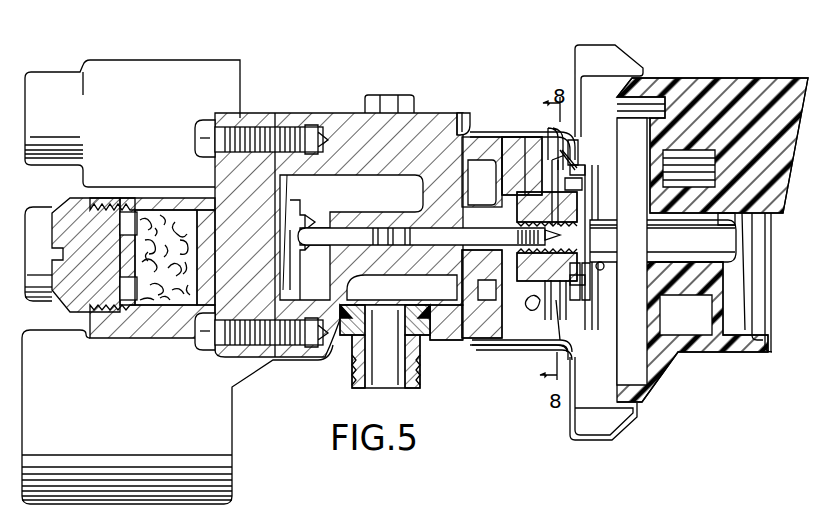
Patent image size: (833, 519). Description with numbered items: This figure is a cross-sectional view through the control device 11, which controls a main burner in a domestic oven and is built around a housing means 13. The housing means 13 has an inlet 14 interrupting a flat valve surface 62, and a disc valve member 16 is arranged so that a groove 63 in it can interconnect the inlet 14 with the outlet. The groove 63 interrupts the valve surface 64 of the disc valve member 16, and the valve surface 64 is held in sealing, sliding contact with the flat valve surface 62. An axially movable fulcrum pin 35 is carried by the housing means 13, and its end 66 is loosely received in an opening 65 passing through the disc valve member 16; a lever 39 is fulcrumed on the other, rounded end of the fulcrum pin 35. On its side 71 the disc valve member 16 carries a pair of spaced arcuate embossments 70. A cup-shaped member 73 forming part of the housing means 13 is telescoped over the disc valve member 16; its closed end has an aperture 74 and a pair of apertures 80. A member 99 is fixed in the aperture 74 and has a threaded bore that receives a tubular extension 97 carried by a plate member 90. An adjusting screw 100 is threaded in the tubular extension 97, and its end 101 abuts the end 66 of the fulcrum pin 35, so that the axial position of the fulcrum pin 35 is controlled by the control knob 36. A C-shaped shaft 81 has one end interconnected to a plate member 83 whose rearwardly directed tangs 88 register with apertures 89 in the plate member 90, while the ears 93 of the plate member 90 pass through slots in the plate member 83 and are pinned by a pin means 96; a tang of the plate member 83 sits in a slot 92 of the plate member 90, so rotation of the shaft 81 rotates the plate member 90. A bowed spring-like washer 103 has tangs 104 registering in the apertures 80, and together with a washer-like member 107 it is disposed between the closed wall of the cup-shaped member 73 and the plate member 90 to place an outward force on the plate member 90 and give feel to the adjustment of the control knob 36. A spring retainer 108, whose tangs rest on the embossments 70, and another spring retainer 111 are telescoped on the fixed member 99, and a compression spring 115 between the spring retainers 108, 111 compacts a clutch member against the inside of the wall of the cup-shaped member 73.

The control device 11 is at (652, 26).
The housing means 13 is at (315, 112).
The inlet 14 is at (456, 342).
The disc valve member 16 is at (490, 132).
The fulcrum pin 35 is at (345, 228).
The control knob 36 is at (738, 88).
The lever 39 is at (320, 205).
The flat valve surface 62 is at (473, 132).
The groove 63 is at (505, 138).
The valve surface 64 is at (455, 296).
The opening 65 is at (482, 172).
The end of fulcrum pin 66 is at (497, 250).
The arcuate embossments 70 is at (543, 128).
The side of disc valve 71 is at (505, 346).
The cup-shaped member 73 is at (527, 355).
The aperture 74 is at (547, 265).
The apertures 80 is at (565, 318).
The C-shaped shaft 81 is at (723, 213).
The plate member 83 is at (585, 193).
The rearwardly directed tangs 88 is at (590, 284).
The apertures 89 is at (590, 292).
The plate member 90 is at (582, 178).
The slot 92 is at (577, 160).
The ears 93 is at (608, 258).
The pin means 96 is at (605, 266).
The tubular extension 97 is at (547, 209).
The member 99 is at (598, 210).
The adjusting screw 100 is at (504, 270).
The end of adjusting screw 101 is at (500, 240).
The bowed spring-like washer 103 is at (575, 300).
The tangs 104 is at (565, 300).
The washer-like member 107 is at (580, 146).
The spring retainer 108 is at (528, 300).
The spring retainer 111 is at (560, 160).
The compression spring 115 is at (560, 175).